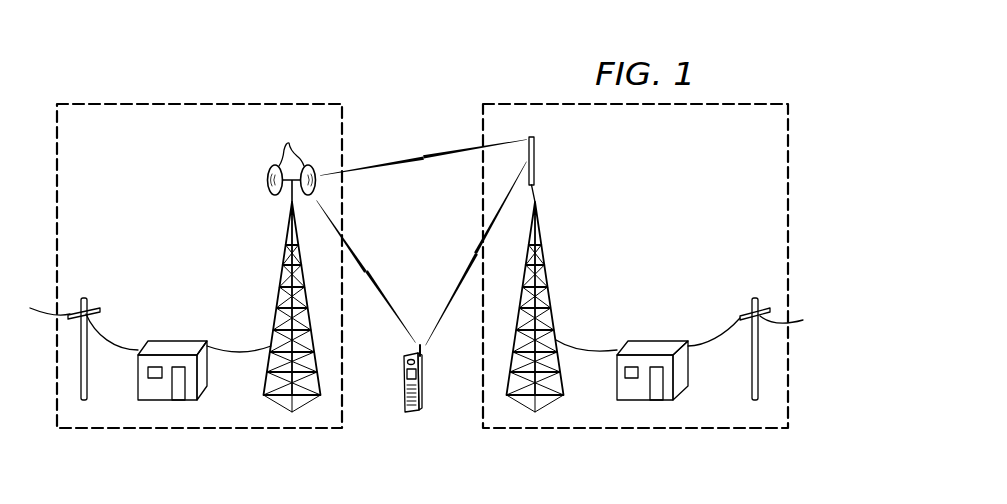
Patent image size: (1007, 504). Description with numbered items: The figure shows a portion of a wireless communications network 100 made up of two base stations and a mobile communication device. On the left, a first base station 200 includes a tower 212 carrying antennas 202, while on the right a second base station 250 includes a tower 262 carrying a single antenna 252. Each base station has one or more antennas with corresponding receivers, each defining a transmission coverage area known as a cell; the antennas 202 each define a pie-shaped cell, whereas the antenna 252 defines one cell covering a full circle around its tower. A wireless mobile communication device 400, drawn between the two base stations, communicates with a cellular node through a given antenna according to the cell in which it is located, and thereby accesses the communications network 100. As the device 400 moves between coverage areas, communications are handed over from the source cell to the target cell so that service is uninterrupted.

The communications network 100 is at (359, 93).
The base station 200 is at (197, 200).
The antennas 202 is at (292, 157).
The tower 212 is at (279, 288).
The base station 250 is at (693, 200).
The antenna 252 is at (537, 157).
The tower 262 is at (550, 288).
The mobile communication device 400 is at (407, 412).